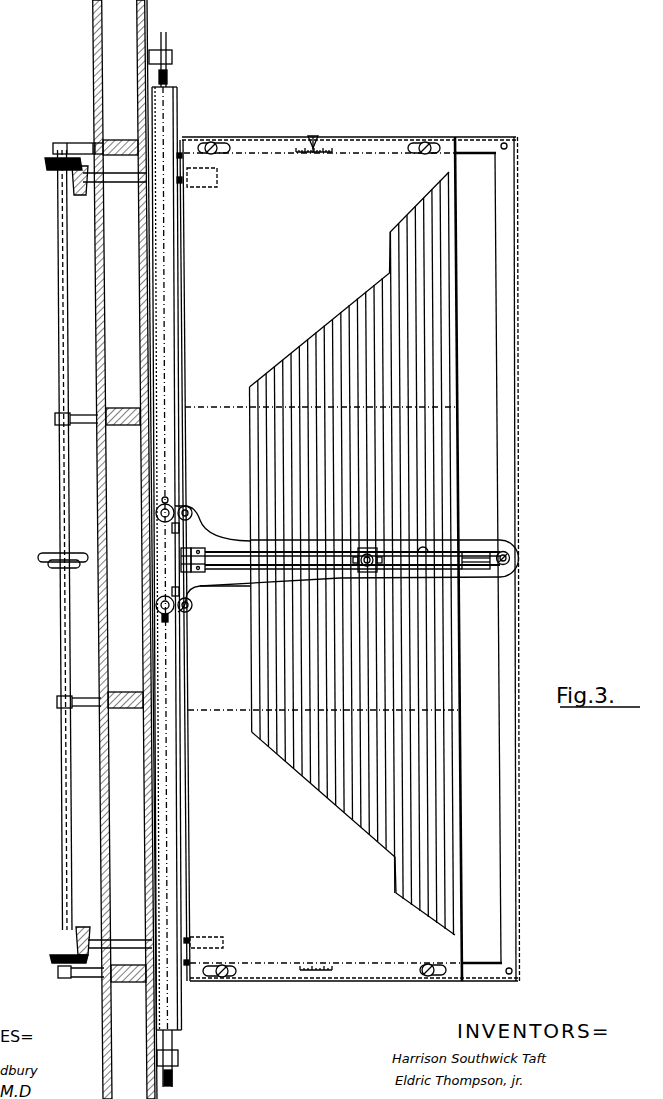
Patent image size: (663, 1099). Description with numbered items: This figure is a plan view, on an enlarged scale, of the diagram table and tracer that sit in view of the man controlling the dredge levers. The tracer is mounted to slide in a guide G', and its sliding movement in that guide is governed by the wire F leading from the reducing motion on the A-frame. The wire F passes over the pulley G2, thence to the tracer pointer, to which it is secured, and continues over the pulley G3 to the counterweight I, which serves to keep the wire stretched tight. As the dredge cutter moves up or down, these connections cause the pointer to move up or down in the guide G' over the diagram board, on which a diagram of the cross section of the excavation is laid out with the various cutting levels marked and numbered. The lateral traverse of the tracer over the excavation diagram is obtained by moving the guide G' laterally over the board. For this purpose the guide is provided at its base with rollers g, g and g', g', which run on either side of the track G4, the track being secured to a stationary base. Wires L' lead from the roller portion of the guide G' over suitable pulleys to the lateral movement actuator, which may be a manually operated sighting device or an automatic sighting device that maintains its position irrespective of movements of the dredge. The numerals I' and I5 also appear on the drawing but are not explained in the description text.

The counterweight I is at (361, 558).
The fan of wires I' is at (350, 553).
The guide rod I5 is at (169, 54).
The wires L' is at (147, 558).
The track G4 is at (466, 522).
The guide G' is at (418, 525).
The pulley G2 is at (205, 553).
The pulley G3 is at (512, 548).
The wire F is at (190, 549).
The rollers g is at (194, 552).
The rollers g' is at (183, 552).